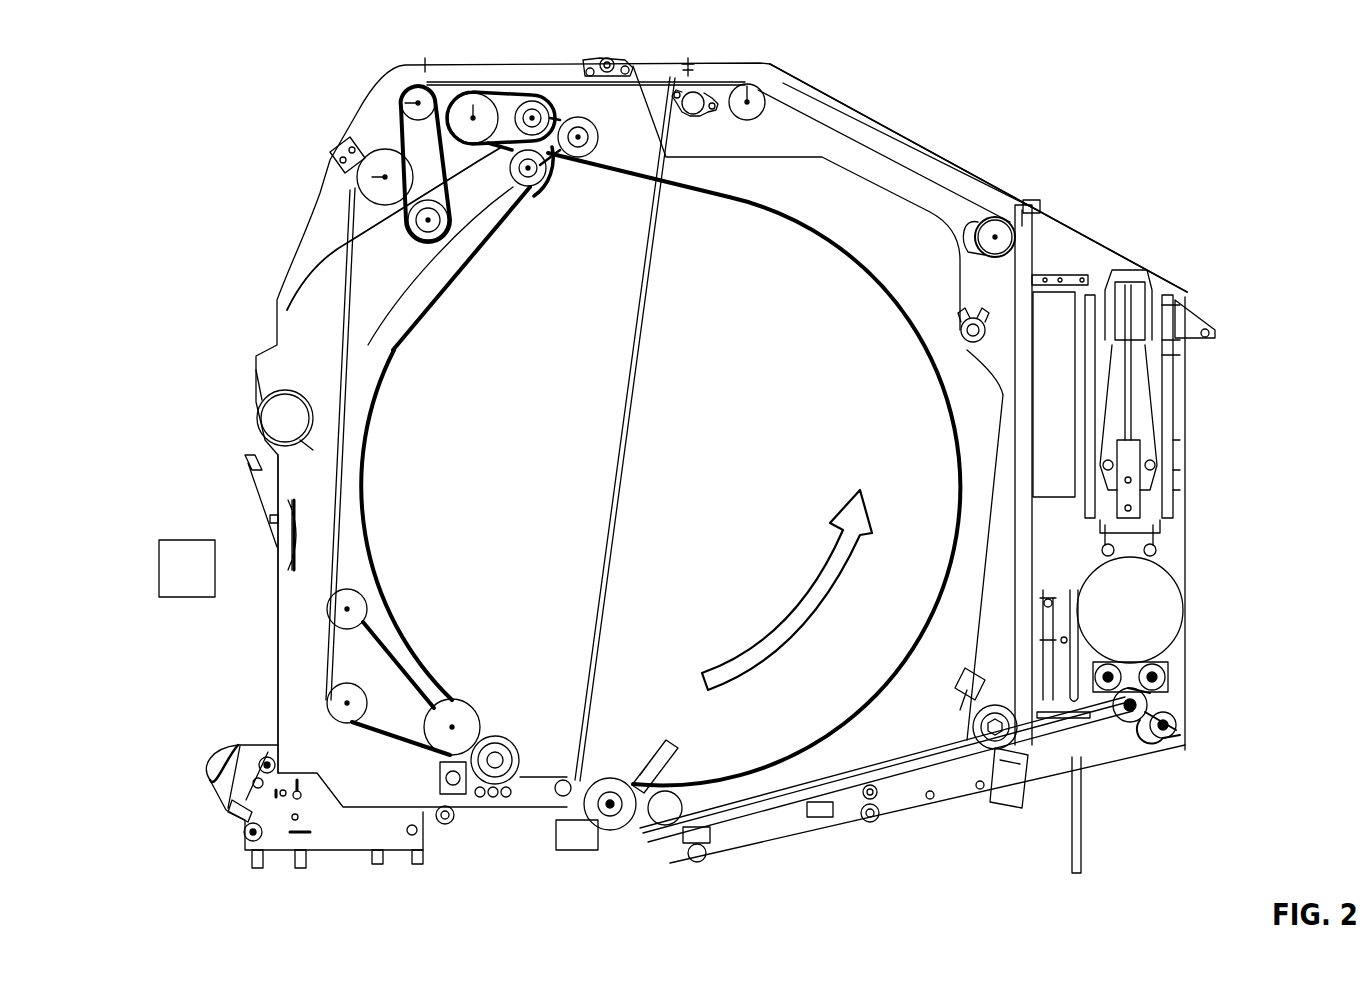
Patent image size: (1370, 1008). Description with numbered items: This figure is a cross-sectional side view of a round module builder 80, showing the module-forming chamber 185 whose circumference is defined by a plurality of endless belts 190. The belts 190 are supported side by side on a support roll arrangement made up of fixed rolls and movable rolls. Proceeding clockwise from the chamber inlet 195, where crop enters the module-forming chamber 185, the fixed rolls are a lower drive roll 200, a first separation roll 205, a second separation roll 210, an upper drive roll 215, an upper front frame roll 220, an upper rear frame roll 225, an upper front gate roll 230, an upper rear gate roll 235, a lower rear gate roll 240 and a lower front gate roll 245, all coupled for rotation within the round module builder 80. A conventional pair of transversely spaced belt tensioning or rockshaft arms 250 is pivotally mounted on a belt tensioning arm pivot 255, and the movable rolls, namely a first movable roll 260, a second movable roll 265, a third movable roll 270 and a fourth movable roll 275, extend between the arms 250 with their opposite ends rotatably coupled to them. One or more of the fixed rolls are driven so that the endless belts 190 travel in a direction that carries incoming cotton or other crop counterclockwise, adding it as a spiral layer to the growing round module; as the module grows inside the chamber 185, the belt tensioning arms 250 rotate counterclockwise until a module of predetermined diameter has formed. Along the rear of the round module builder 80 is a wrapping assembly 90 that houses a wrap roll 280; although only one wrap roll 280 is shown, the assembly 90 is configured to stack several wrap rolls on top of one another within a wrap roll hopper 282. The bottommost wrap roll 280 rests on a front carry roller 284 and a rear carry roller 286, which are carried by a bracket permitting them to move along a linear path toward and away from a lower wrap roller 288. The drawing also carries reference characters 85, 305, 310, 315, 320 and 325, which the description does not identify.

The round module builder 80 is at (1138, 68).
The frame side wall 85 is at (297, 653).
The wrapping assembly 90 is at (1117, 247).
The module-forming chamber 185 is at (745, 372).
The endless belts 190 is at (820, 232).
The chamber inlet 195 is at (520, 820).
The lower drive roll 200 is at (463, 713).
The first separation roll 205 is at (342, 707).
The second separation roll 210 is at (366, 600).
The upper drive roll 215 is at (380, 170).
The upper front frame roll 220 is at (410, 101).
The upper rear frame roll 225 is at (477, 108).
The upper front gate roll 230 is at (750, 97).
The upper rear gate roll 235 is at (1007, 207).
The lower rear gate roll 240 is at (1018, 803).
The lower front gate roll 245 is at (612, 822).
The belt tensioning arms 250 is at (303, 313).
The belt tensioning arm pivot 255 is at (273, 408).
The first movable roll 260 is at (426, 240).
The second movable roll 265 is at (528, 188).
The third movable roll 270 is at (533, 110).
The fourth movable roll 275 is at (574, 157).
The wrap roll 280 is at (1167, 600).
The wrap roll hopper 282 is at (1185, 436).
The front carry roller 284 is at (1160, 665).
The rear carry roller 286 is at (1160, 683).
The lower wrap roller 288 is at (1133, 718).
The rotation direction arrow 305 is at (775, 640).
The strut 310 is at (240, 466).
The fastener 315 is at (273, 520).
The bracket 320 is at (278, 540).
The controller 325 is at (159, 575).